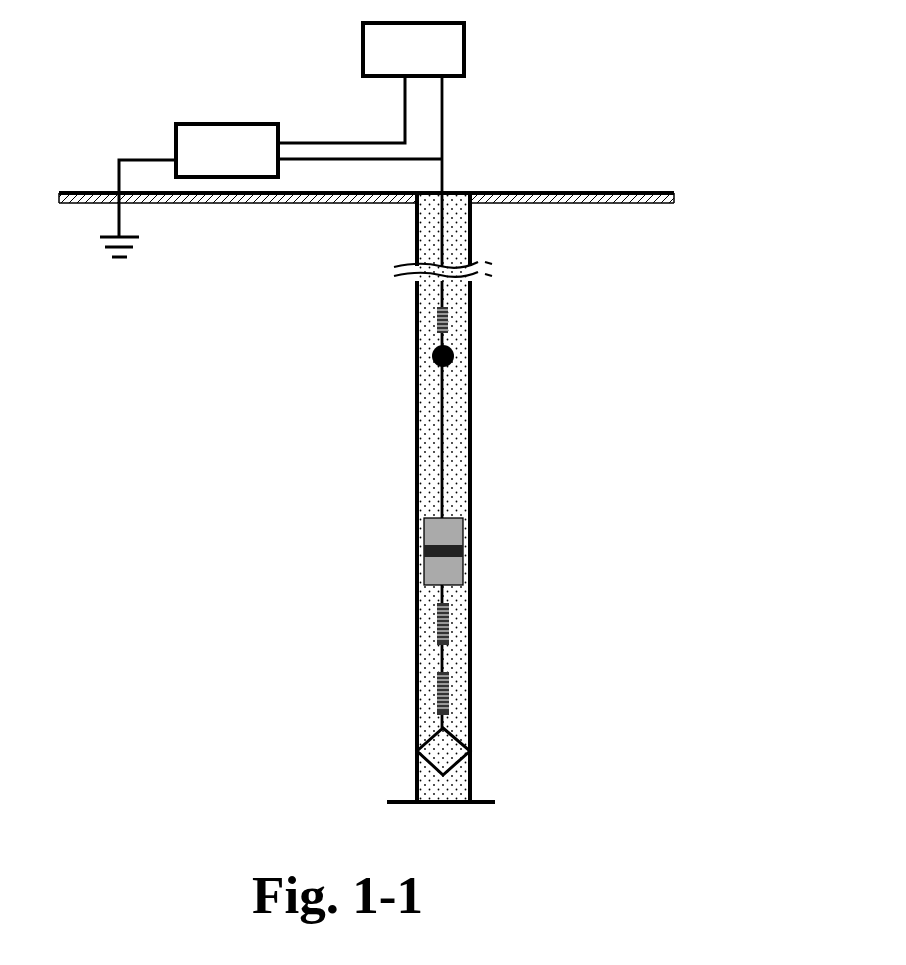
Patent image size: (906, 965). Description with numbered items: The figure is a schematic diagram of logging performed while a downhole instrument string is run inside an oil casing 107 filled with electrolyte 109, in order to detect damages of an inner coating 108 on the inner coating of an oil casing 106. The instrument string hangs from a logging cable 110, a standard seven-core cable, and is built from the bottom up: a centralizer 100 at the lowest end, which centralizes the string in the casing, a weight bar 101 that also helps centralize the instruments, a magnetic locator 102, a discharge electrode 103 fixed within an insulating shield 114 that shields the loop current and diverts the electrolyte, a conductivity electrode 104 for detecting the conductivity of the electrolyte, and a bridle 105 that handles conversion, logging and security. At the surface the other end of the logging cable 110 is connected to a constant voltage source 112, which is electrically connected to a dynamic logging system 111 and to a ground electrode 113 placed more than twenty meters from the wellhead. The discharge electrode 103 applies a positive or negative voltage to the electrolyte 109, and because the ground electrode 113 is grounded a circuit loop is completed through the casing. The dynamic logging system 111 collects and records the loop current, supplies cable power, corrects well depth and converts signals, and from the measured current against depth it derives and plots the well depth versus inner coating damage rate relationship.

The centralizer 100 is at (488, 712).
The weight bar 101 is at (452, 690).
The magnetic locator 102 is at (432, 597).
The discharge electrode 103 is at (460, 548).
The conductivity electrode 104 is at (455, 357).
The bridle 105 is at (435, 322).
The inner coating of an oil casing 106 is at (416, 682).
The oil casing 107 is at (473, 610).
The damages of an inner coating 108 is at (418, 400).
The electrolyte 109 is at (458, 217).
The logging cable 110 is at (445, 168).
The dynamic logging system 111 is at (448, 62).
The constant voltage source 112 is at (241, 121).
The ground electrode 113 is at (103, 255).
The insulating shield 114 is at (430, 532).